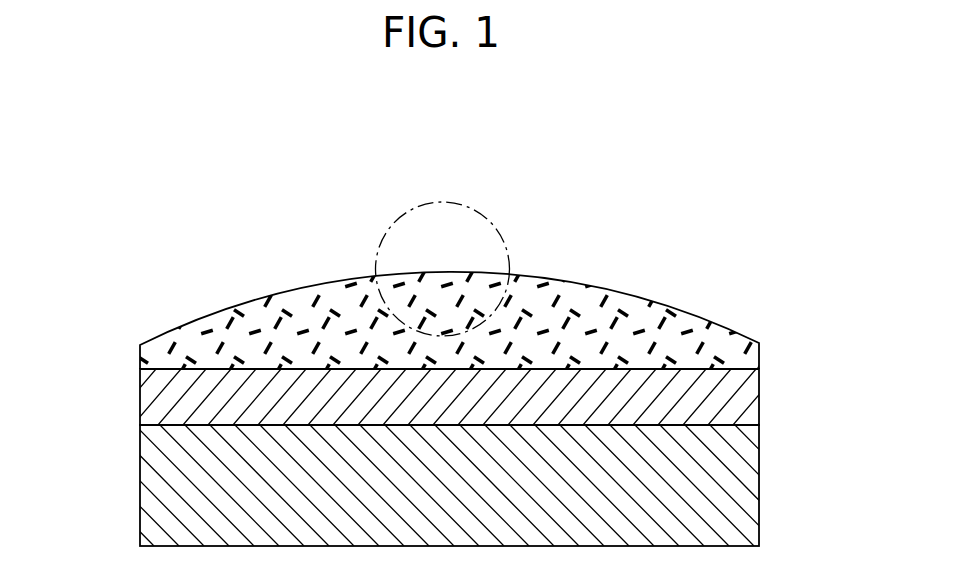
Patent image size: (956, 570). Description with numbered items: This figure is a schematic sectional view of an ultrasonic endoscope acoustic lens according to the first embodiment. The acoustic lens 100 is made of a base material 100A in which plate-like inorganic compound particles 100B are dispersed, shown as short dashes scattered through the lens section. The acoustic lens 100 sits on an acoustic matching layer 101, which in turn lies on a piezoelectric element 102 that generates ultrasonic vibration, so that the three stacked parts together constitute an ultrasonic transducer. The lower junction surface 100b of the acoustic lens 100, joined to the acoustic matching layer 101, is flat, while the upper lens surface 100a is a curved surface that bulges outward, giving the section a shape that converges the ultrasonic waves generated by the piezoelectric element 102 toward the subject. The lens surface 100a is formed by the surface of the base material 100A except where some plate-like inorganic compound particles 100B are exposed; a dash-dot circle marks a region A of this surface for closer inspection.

The acoustic lens 100 is at (445, 335).
The lens surface 100a is at (250, 297).
The junction surface 100b is at (201, 372).
The base material 100A is at (637, 300).
The plate-like inorganic compound particles 100B is at (583, 297).
The enlarged region A is at (462, 204).
The acoustic matching layer 101 is at (754, 390).
The piezoelectric element 102 is at (754, 487).